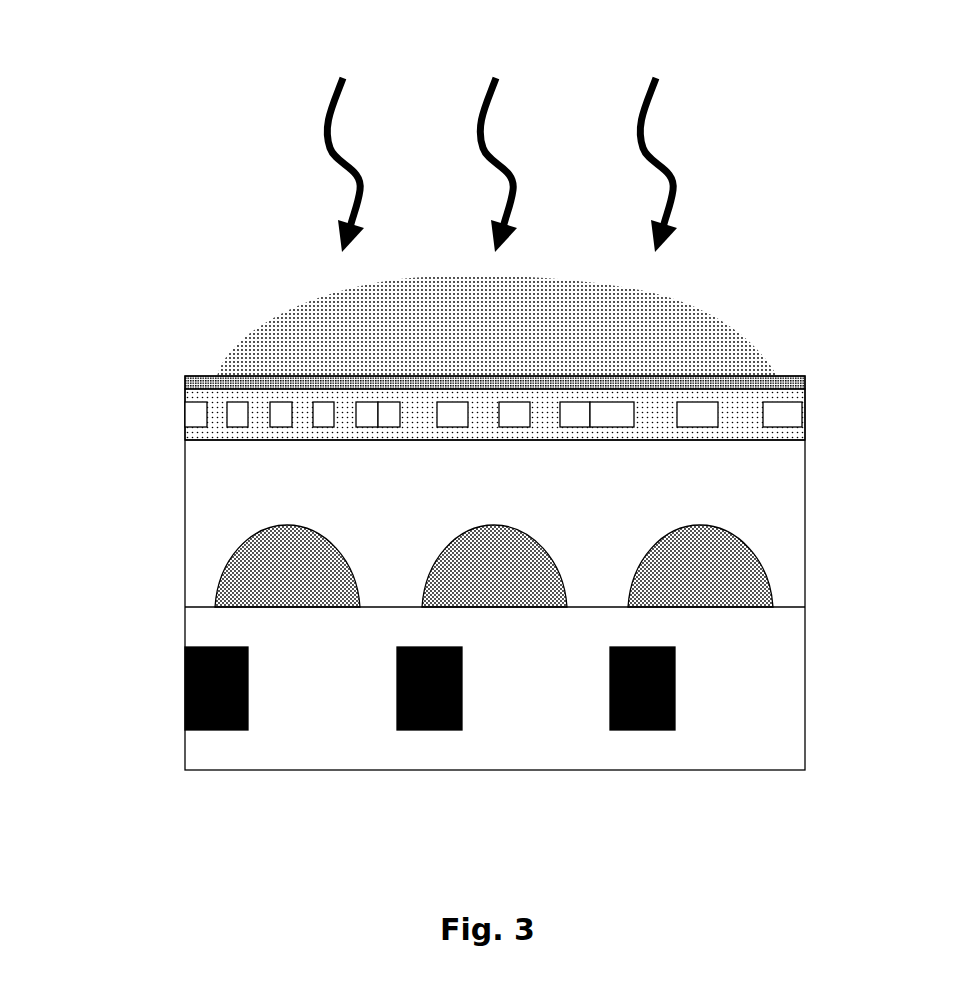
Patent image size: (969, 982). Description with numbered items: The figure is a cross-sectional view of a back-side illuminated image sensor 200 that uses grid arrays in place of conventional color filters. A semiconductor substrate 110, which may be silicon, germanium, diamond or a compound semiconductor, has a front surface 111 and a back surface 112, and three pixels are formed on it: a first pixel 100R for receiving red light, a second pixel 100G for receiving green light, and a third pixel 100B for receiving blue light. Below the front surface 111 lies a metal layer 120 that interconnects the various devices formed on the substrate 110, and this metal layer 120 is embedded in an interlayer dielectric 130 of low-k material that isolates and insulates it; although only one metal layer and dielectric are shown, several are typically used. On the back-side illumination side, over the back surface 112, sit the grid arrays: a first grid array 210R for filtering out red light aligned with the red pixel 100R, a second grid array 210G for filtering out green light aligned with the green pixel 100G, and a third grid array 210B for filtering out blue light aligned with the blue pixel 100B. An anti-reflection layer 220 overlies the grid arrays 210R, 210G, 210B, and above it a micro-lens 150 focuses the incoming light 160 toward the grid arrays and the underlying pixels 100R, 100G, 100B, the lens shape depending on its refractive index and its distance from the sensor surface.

The back-side illuminated image sensor 200 is at (130, 213).
The light 160 is at (455, 88).
The micro-lens 150 is at (697, 308).
The anti-reflection layer 220 is at (713, 383).
The first grid array 210R is at (262, 407).
The second grid array 210G is at (527, 408).
The third grid array 210B is at (793, 437).
The back surface 112 is at (195, 439).
The semiconductor substrate 110 is at (185, 565).
The front surface 111 is at (374, 613).
The first pixel 100R is at (312, 548).
The second pixel 100G is at (540, 565).
The third pixel 100B is at (740, 572).
The metal layer 120 is at (185, 677).
The interlayer dielectric 130 is at (185, 752).